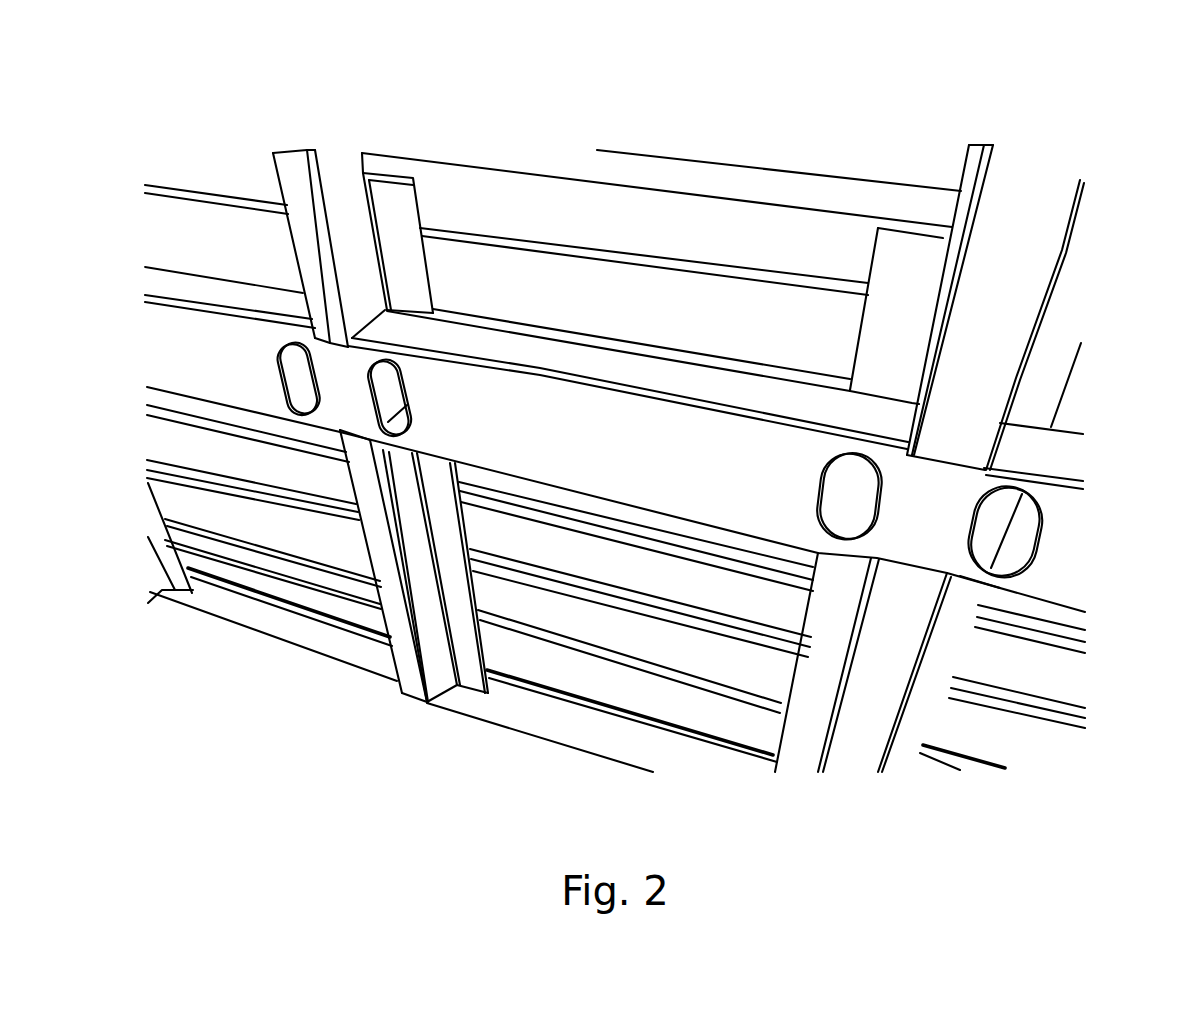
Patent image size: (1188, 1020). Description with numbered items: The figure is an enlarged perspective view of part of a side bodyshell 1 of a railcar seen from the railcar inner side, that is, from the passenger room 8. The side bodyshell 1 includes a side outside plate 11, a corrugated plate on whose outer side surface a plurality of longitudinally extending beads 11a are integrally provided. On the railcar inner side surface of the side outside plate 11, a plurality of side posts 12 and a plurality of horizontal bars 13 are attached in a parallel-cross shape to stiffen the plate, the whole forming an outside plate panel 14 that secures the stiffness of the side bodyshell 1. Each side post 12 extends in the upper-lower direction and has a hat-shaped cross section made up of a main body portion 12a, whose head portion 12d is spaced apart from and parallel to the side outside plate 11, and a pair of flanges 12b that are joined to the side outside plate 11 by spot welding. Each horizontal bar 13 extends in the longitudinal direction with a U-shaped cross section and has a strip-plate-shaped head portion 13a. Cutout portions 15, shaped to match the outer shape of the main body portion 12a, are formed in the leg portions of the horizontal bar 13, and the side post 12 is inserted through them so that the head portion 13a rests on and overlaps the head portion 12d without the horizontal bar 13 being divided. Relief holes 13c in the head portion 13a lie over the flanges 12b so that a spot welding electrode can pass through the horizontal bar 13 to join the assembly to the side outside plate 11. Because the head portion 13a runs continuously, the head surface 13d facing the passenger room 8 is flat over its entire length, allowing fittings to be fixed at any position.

The side bodyshell 1 is at (1089, 118).
The passenger room 8 is at (577, 670).
The side outside plate 11 is at (700, 206).
The bead 11a is at (533, 330).
The side post 12 is at (340, 170).
The main body portion 12a is at (315, 252).
The flange 12b is at (407, 268).
The head portion 12d is at (368, 485).
The horizontal bar 13 is at (663, 413).
The head portion 13a is at (965, 577).
The relief hole 13c is at (387, 392).
The head surface 13d is at (616, 499).
The outside plate panel 14 is at (596, 120).
The cutout portion 15 is at (343, 320).